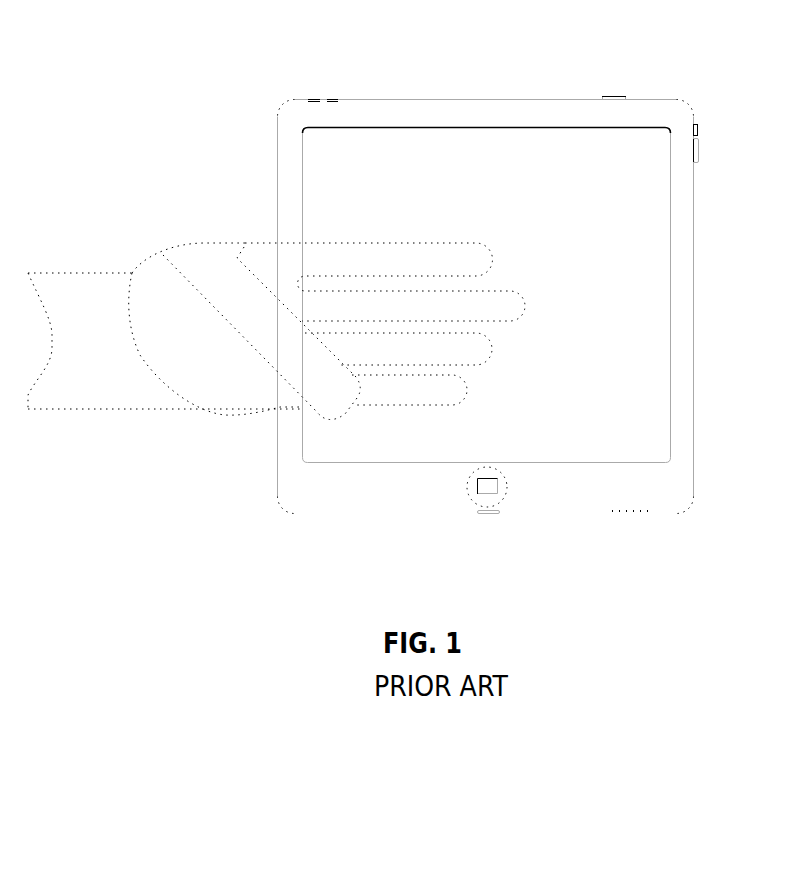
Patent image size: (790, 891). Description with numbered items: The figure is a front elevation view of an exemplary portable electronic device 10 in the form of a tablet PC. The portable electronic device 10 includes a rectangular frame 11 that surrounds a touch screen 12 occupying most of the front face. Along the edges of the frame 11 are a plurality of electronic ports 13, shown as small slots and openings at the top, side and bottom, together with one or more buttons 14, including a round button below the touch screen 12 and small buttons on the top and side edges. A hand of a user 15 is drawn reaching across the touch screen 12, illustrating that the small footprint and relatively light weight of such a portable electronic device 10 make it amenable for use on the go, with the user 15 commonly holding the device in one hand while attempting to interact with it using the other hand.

The portable electronic device 10 is at (485, 74).
The housing / body 11 is at (486, 307).
The touch screen 12 is at (487, 295).
The electronic ports 13 is at (320, 98).
The buttons / controls 14 is at (615, 95).
The user 15 is at (89, 270).